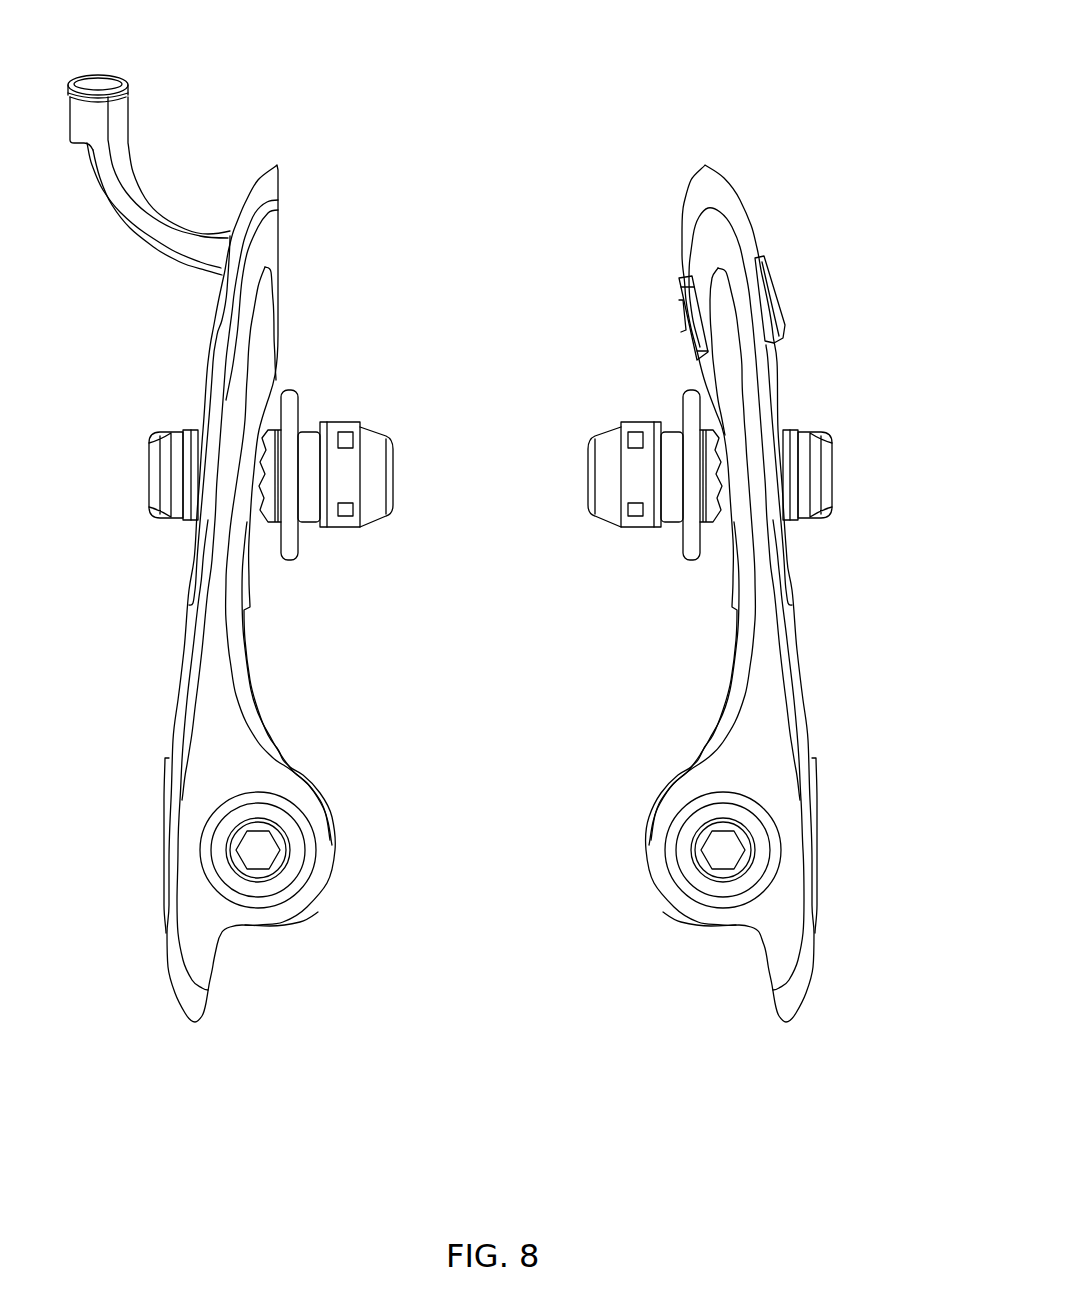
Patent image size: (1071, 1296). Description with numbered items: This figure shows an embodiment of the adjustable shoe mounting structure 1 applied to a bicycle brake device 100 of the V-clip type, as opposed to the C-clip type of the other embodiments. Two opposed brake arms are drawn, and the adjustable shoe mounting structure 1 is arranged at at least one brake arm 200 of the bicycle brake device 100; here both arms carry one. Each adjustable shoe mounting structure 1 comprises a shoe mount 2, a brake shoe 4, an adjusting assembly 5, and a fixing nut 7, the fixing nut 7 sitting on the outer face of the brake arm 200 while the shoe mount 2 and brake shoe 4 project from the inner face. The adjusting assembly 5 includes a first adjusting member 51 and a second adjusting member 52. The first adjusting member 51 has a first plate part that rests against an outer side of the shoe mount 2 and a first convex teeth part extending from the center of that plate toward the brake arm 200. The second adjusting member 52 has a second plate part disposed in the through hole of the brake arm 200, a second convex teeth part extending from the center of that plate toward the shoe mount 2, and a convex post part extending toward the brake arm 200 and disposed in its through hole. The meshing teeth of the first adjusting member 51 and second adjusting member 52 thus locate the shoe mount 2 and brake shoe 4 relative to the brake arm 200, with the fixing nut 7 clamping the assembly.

The bicycle brake device 100 is at (610, 118).
The brake arm 200 is at (224, 371).
The adjustable shoe mounting structure 1 is at (330, 378).
The shoe mount 2 is at (345, 426).
The brake shoe 4 is at (383, 500).
The adjusting assembly 5 is at (375, 632).
The first adjusting member 51 is at (289, 575).
The second adjusting member 52 is at (260, 503).
The fixing nut 7 is at (165, 479).